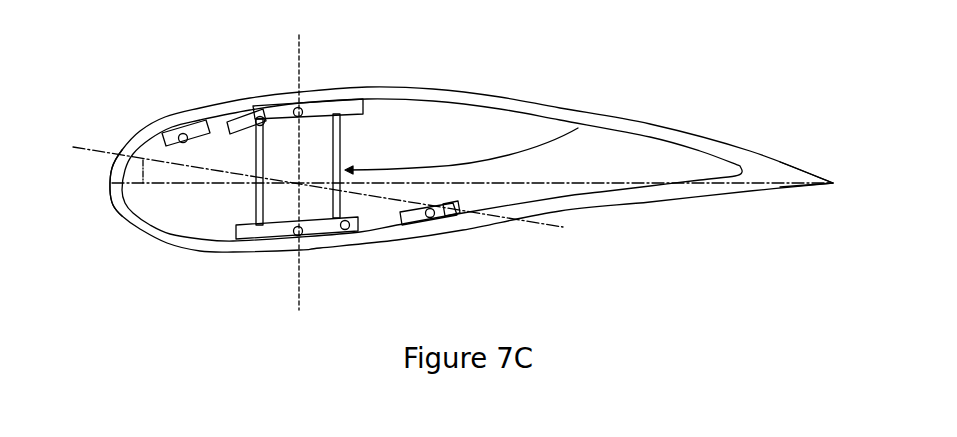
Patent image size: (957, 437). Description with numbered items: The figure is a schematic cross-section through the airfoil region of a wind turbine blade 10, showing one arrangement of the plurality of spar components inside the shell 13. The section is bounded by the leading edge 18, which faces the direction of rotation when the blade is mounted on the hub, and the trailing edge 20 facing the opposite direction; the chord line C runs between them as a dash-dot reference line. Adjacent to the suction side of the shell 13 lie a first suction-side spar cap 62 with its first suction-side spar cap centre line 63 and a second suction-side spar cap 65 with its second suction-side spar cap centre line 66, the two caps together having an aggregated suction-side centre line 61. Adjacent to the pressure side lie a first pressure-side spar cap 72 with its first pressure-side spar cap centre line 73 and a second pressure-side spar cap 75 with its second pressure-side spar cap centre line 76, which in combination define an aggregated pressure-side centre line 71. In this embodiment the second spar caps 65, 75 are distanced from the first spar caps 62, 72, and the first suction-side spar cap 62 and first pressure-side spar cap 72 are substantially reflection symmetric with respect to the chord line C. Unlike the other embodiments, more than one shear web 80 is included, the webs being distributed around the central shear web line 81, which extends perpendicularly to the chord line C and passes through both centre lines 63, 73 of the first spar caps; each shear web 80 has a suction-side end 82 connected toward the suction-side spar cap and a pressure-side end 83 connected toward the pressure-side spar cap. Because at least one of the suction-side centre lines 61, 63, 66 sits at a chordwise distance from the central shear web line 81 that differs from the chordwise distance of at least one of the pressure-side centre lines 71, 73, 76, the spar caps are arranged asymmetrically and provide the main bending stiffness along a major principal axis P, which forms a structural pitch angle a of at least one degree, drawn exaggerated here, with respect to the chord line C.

The wind turbine blade 10 is at (714, 108).
The shell 13 is at (165, 255).
The leading edge 18 is at (112, 186).
The trailing edge 20 is at (834, 183).
The aggregated suction-side centre line 61 is at (258, 115).
The first suction-side spar cap 62 is at (297, 110).
The first suction-side spar cap centre line 63 is at (302, 108).
The second suction-side spar cap 65 is at (162, 128).
The second suction-side spar cap centre line 66 is at (178, 127).
The aggregated pressure-side centre line 71 is at (348, 233).
The first pressure-side spar cap 72 is at (280, 239).
The first pressure-side spar cap centre line 73 is at (300, 238).
The second pressure-side spar cap 75 is at (416, 228).
The second pressure-side spar cap centre line 76 is at (440, 230).
The shear web 80 is at (365, 207).
The central shear web line 81 is at (300, 289).
The suction-side end 82 is at (343, 118).
The pressure-side end 83 is at (458, 208).
The major principal axis P is at (565, 183).
The chord line C is at (520, 184).
The structural pitch angle a is at (138, 173).